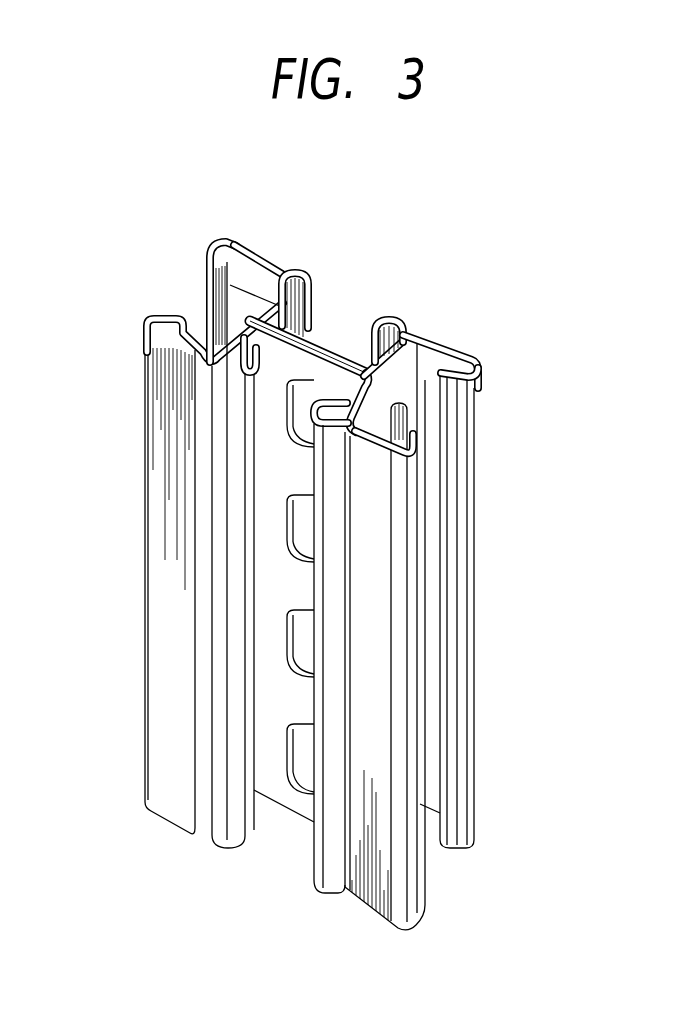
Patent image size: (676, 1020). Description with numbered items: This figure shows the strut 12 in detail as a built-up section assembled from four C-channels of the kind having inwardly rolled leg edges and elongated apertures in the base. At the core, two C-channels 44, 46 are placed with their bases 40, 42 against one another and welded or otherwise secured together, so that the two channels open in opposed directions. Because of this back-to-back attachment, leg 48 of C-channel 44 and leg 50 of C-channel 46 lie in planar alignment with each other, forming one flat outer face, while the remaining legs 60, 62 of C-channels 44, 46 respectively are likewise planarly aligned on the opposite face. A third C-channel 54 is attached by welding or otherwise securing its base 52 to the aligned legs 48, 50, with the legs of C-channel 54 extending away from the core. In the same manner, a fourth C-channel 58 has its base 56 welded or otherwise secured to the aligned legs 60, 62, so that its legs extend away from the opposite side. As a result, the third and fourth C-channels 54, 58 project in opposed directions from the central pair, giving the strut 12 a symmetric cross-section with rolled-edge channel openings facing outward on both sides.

The strut 12 is at (500, 523).
The base 40 is at (336, 368).
The base 42 is at (305, 425).
The C-channel 44 is at (289, 323).
The C-channel 46 is at (270, 381).
The leg 48 is at (373, 321).
The leg 50 is at (352, 418).
The base 52 is at (404, 361).
The third C-channel 54 is at (445, 408).
The base 56 is at (244, 252).
The fourth C-channel 58 is at (165, 405).
The leg 60 is at (274, 264).
The leg 62 is at (220, 290).